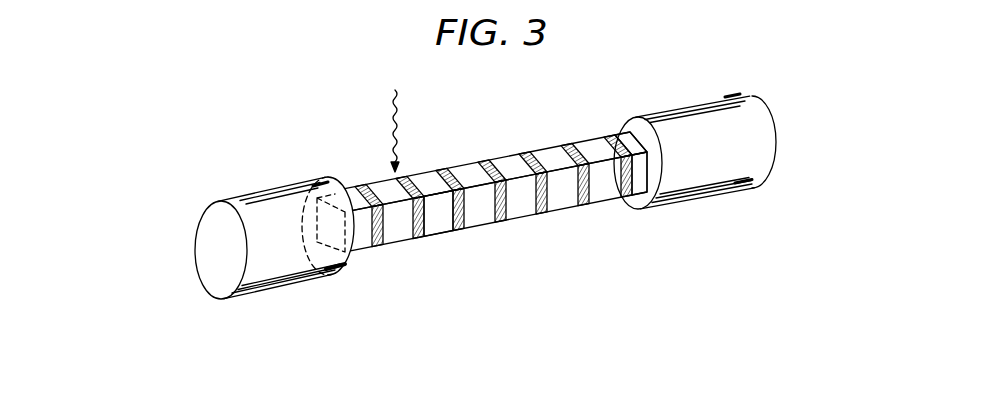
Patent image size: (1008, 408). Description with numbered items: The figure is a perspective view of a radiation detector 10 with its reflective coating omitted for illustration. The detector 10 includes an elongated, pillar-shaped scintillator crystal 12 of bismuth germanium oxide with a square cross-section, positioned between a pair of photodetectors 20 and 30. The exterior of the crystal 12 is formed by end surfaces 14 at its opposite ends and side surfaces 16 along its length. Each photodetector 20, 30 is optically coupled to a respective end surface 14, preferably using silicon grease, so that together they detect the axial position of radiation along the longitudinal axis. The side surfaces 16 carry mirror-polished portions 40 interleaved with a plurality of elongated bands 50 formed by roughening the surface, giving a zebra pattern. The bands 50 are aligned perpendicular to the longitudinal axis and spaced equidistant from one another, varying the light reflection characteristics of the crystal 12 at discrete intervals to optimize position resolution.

The radiation detector 10 is at (272, 81).
The scintillator crystal 12 is at (468, 150).
The end surfaces 14 is at (641, 133).
The side surfaces 16 is at (541, 157).
The photodetector 20 is at (273, 200).
The photodetector 30 is at (718, 102).
The mirror-polished portions 40 is at (438, 222).
The elongated bands 50 is at (463, 215).